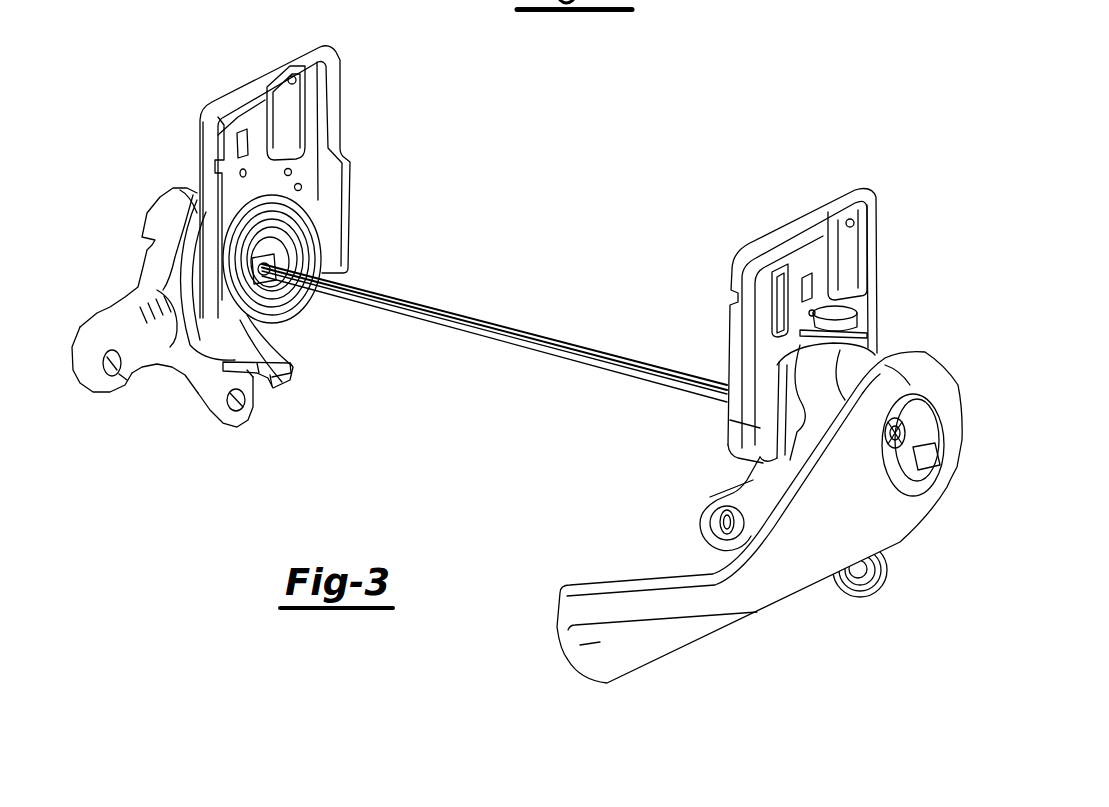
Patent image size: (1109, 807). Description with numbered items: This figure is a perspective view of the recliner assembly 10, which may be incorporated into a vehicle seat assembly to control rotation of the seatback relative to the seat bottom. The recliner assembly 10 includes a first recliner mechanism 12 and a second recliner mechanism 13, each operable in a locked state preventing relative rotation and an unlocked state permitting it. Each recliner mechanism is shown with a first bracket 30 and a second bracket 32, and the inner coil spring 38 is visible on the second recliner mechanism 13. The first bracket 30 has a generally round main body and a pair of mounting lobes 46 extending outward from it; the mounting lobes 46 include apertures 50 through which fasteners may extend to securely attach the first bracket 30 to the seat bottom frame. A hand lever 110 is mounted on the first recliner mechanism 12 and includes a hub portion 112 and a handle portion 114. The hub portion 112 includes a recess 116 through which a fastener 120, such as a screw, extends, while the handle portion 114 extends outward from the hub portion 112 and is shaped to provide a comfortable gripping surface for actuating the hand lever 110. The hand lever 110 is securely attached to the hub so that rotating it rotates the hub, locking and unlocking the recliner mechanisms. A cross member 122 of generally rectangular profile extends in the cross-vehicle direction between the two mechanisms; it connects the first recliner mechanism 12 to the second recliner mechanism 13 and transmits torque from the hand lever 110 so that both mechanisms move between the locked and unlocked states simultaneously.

The recliner assembly 10 is at (642, 190).
The first recliner mechanism 12 is at (902, 207).
The second recliner mechanism 13 is at (195, 86).
The first bracket 30 is at (173, 397).
The second bracket 32 is at (250, 83).
The inner coil spring 38 is at (323, 243).
The mounting lobes 46 is at (88, 353).
The apertures 50 is at (115, 365).
The hand lever 110 is at (949, 335).
The hub portion 112 is at (910, 368).
The handle portion 114 is at (650, 643).
The recess 116 is at (900, 419).
The fastener 120 is at (888, 453).
The cross member 122 is at (513, 327).